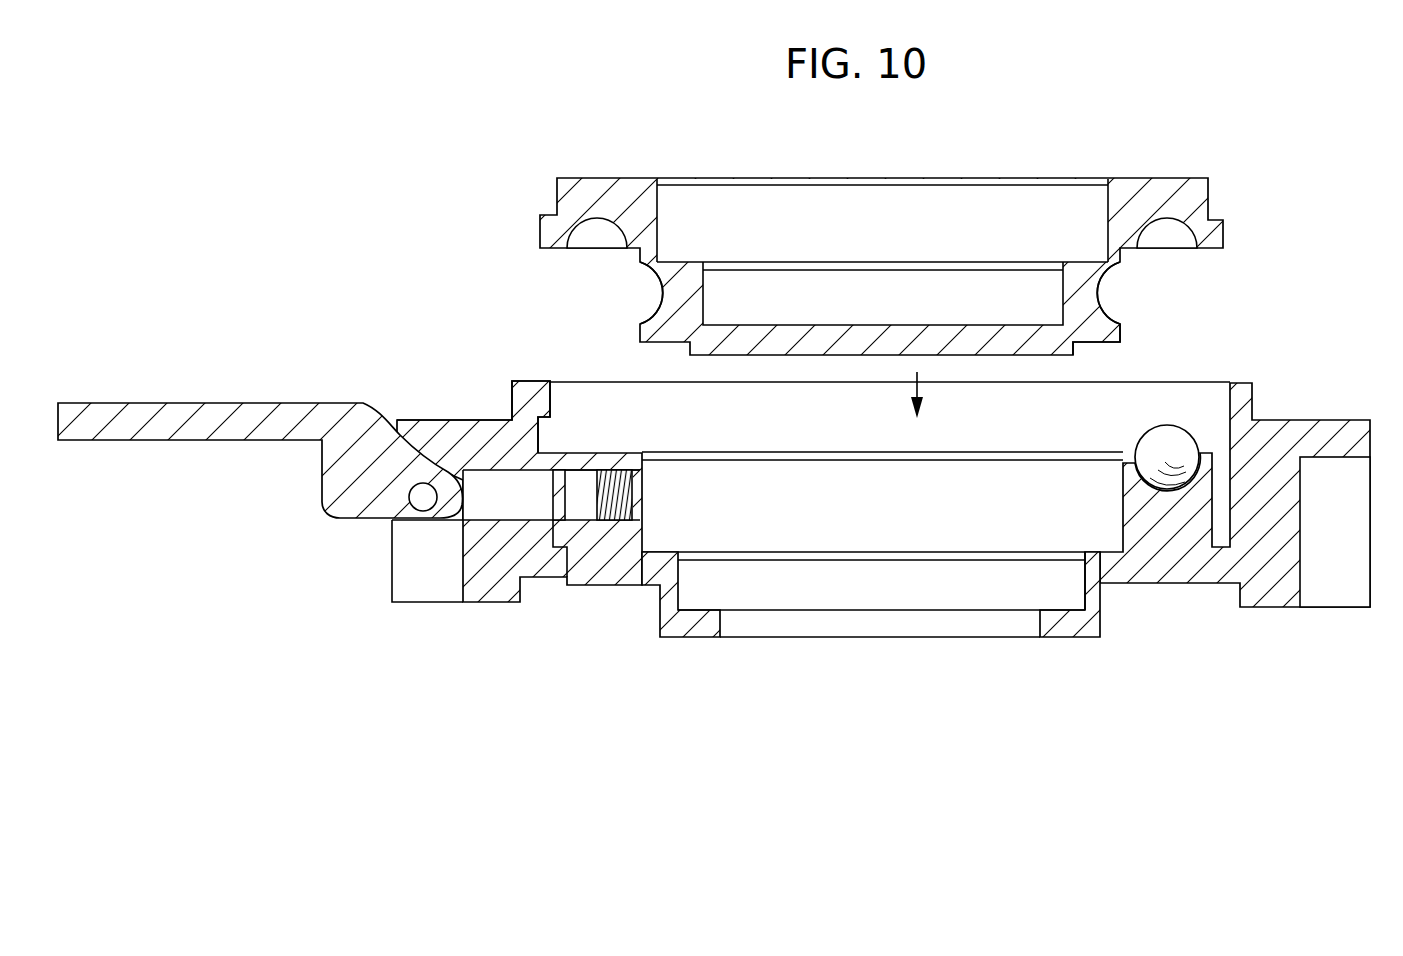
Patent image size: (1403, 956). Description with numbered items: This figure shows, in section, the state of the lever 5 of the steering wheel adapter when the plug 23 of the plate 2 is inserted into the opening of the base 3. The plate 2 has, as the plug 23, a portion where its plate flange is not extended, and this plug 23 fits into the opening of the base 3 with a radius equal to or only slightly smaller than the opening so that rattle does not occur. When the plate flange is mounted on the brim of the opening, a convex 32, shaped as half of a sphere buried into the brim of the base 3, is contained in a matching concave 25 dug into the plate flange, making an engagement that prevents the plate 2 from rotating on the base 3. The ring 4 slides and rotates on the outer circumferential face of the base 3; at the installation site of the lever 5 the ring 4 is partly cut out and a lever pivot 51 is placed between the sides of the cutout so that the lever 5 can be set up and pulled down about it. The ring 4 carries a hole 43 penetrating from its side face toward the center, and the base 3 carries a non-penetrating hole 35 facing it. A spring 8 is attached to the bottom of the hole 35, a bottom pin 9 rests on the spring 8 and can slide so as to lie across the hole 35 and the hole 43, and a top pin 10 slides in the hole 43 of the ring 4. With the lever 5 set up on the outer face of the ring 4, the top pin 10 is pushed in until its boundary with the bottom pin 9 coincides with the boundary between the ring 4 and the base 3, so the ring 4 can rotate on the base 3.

The plate 2 is at (881, 231).
The base 3 is at (690, 638).
The ring 4 is at (501, 590).
The lever 5 is at (188, 402).
The spring 8 is at (617, 522).
The bottom pin 9 is at (582, 524).
The top pin 10 is at (476, 510).
The plug 23 is at (1080, 297).
The concave 25 is at (1172, 238).
The convex 32 is at (1162, 494).
The hole 35 is at (590, 468).
The hole 43 is at (493, 457).
The lever pivot 51 is at (412, 502).